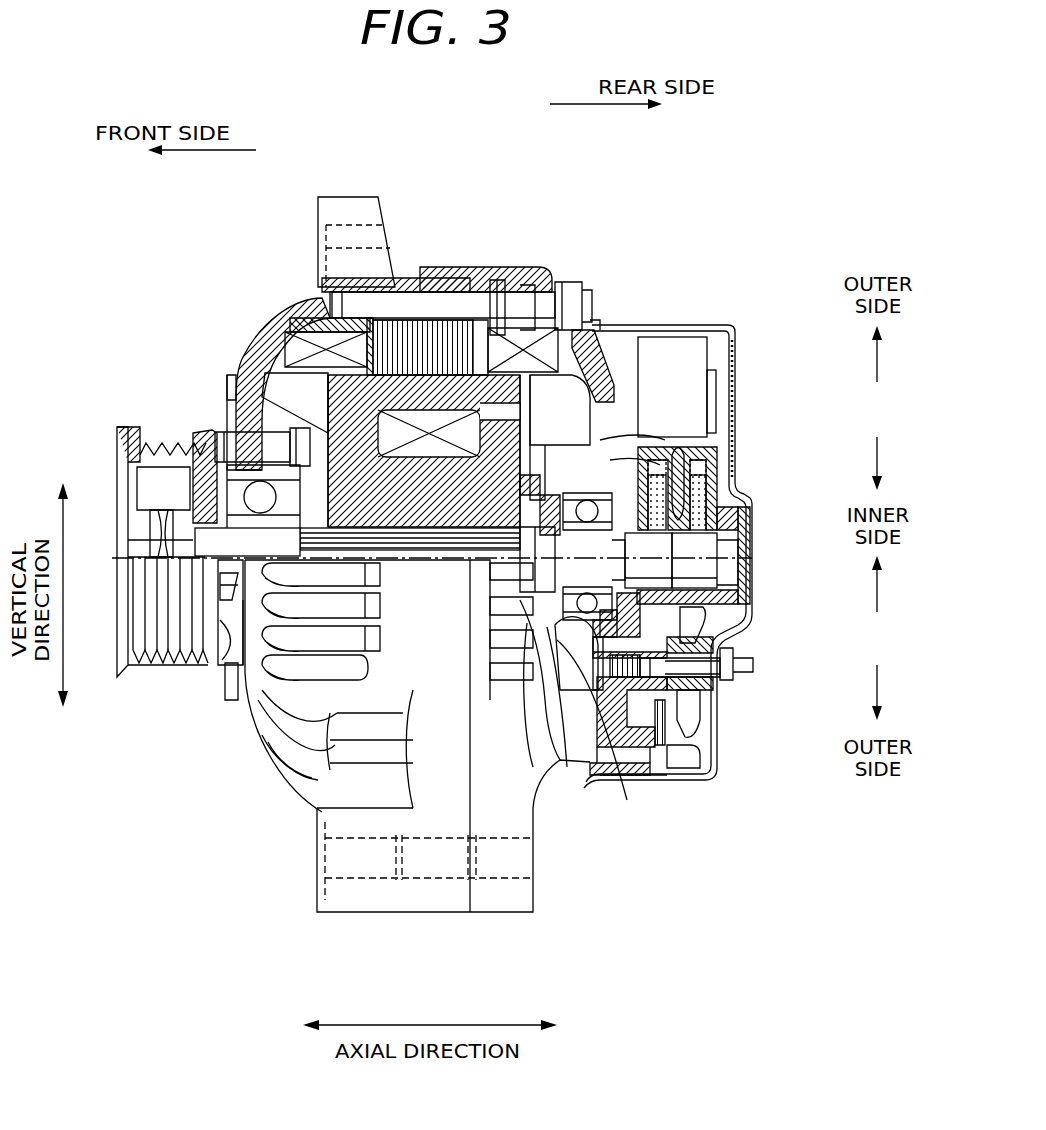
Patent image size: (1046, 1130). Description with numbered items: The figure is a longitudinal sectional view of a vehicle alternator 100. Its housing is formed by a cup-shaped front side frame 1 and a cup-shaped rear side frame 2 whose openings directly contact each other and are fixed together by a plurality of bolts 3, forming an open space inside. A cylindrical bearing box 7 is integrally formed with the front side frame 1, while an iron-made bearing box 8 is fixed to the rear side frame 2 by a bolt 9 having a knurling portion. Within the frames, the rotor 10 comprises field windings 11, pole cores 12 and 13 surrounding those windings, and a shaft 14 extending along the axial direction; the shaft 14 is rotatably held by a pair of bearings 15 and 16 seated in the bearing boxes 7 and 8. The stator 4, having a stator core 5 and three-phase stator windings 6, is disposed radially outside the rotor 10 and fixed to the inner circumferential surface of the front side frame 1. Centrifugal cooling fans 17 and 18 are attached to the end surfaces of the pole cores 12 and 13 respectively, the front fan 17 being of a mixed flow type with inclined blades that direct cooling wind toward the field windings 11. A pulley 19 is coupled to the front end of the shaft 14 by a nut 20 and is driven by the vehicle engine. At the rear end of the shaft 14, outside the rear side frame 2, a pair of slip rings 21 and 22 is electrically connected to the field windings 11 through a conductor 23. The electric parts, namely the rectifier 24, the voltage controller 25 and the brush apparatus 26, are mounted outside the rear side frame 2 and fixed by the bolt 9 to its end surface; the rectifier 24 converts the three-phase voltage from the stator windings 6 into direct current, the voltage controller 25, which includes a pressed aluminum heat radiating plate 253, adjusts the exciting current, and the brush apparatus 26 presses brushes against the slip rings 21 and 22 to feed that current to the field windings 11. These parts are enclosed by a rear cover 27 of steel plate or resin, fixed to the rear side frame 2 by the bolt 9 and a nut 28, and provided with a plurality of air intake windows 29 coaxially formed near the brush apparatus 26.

The alternator 100 is at (628, 208).
The front side frame 1 is at (358, 900).
The rear side frame 2 is at (500, 900).
The bolts 3 is at (455, 405).
The stator 4 is at (456, 345).
The stator core 5 is at (415, 283).
The stator windings 6 is at (320, 332).
The bearing box 7 is at (218, 665).
The bearing box 8 is at (620, 770).
The bolt 9 is at (758, 663).
The rotor 10 is at (422, 345).
The field windings 11 is at (525, 333).
The pole core 12 is at (286, 383).
The pole core 13 is at (590, 355).
The shaft 14 is at (250, 448).
The bearing 15 is at (250, 500).
The bearing 16 is at (615, 455).
The cooling fan 17 is at (283, 380).
The cooling fan 18 is at (580, 398).
The pulley 19 is at (122, 675).
The nut 20 is at (162, 520).
The slip ring 21 is at (660, 550).
The slip ring 22 is at (712, 565).
The conductor 23 is at (600, 423).
The rectifier 24 is at (700, 718).
The voltage controller 25 is at (695, 355).
The heat radiating plate 253 is at (712, 378).
The brush apparatus 26 is at (718, 470).
The rear cover 27 is at (757, 598).
The nut 28 is at (722, 678).
The air intake windows 29 is at (738, 404).